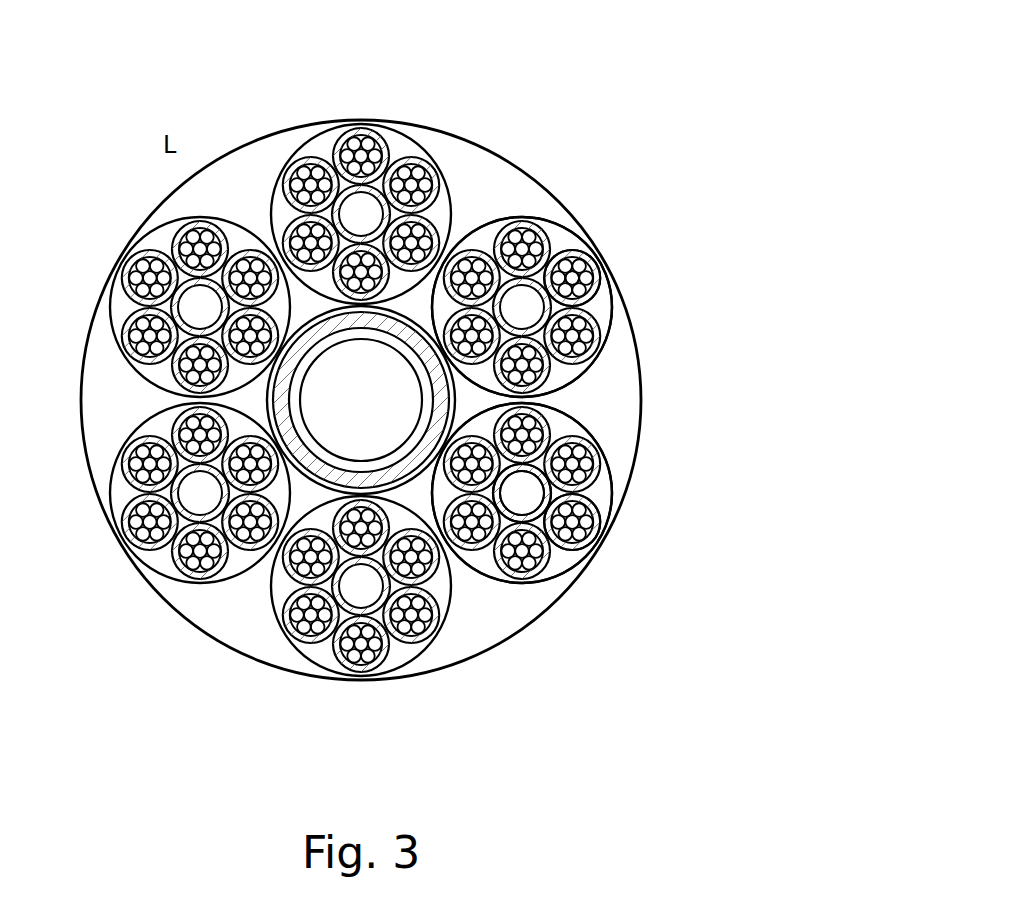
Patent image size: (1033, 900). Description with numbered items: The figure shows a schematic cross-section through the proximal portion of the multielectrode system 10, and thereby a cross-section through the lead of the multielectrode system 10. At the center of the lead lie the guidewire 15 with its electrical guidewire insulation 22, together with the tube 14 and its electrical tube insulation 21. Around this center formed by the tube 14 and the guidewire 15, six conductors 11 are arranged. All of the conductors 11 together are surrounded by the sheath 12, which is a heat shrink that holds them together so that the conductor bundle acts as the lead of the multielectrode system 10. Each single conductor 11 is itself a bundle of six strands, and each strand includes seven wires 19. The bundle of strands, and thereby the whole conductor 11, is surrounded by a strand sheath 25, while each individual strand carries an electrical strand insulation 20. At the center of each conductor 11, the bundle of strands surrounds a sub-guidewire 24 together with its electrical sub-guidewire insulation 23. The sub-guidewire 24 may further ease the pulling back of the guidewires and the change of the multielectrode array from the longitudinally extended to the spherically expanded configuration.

The multielectrode system 10 is at (630, 80).
The conductor 11 is at (558, 236).
The sheath 12 is at (472, 657).
The tube 14 is at (637, 410).
The guidewire 15 is at (361, 400).
The wire 19 is at (600, 252).
The electrical strand insulation 20 is at (570, 276).
The electrical tube insulation 21 is at (598, 430).
The electrical guidewire insulation 22 is at (388, 460).
The electrical sub-guidewire insulation 23 is at (527, 494).
The sub-guidewire 24 is at (595, 547).
The strand sheath 25 is at (607, 323).